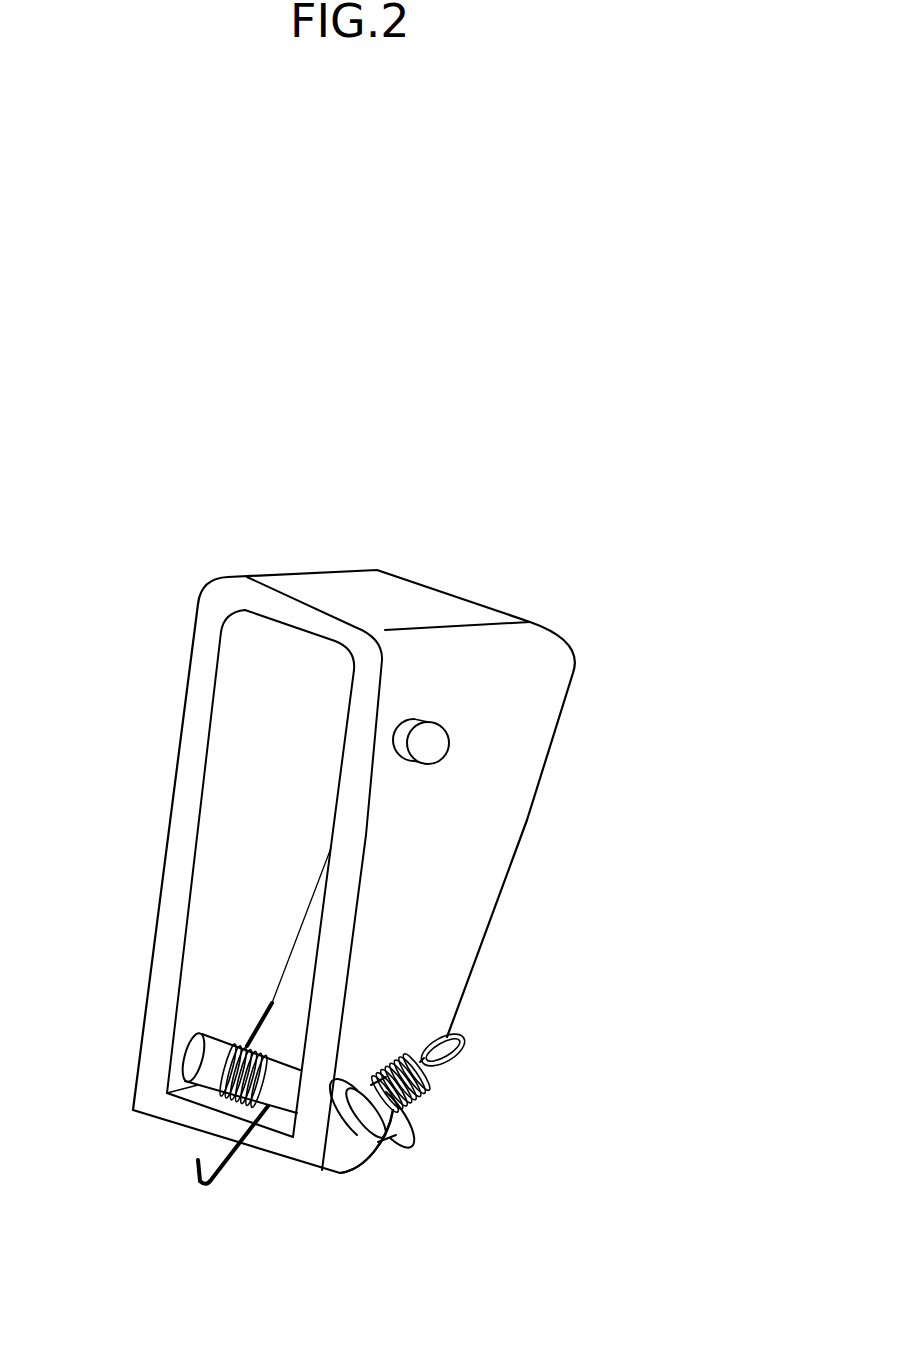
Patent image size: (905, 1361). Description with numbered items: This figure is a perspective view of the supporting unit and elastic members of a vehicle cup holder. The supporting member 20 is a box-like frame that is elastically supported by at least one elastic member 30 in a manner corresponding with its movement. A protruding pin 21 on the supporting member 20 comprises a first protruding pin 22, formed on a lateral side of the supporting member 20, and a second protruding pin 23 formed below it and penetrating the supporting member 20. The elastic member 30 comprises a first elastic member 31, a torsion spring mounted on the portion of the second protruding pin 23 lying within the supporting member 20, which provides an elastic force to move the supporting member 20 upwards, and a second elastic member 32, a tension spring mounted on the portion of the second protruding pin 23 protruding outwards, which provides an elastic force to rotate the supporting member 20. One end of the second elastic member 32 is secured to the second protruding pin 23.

The supporting member 20 is at (532, 637).
The protruding pin 21 is at (513, 946).
The first protruding pin 22 is at (430, 745).
The second protruding pin 23 is at (380, 1063).
The elastic member 30 is at (323, 1086).
The first elastic member 31 is at (283, 1162).
The second elastic member 32 is at (427, 1122).